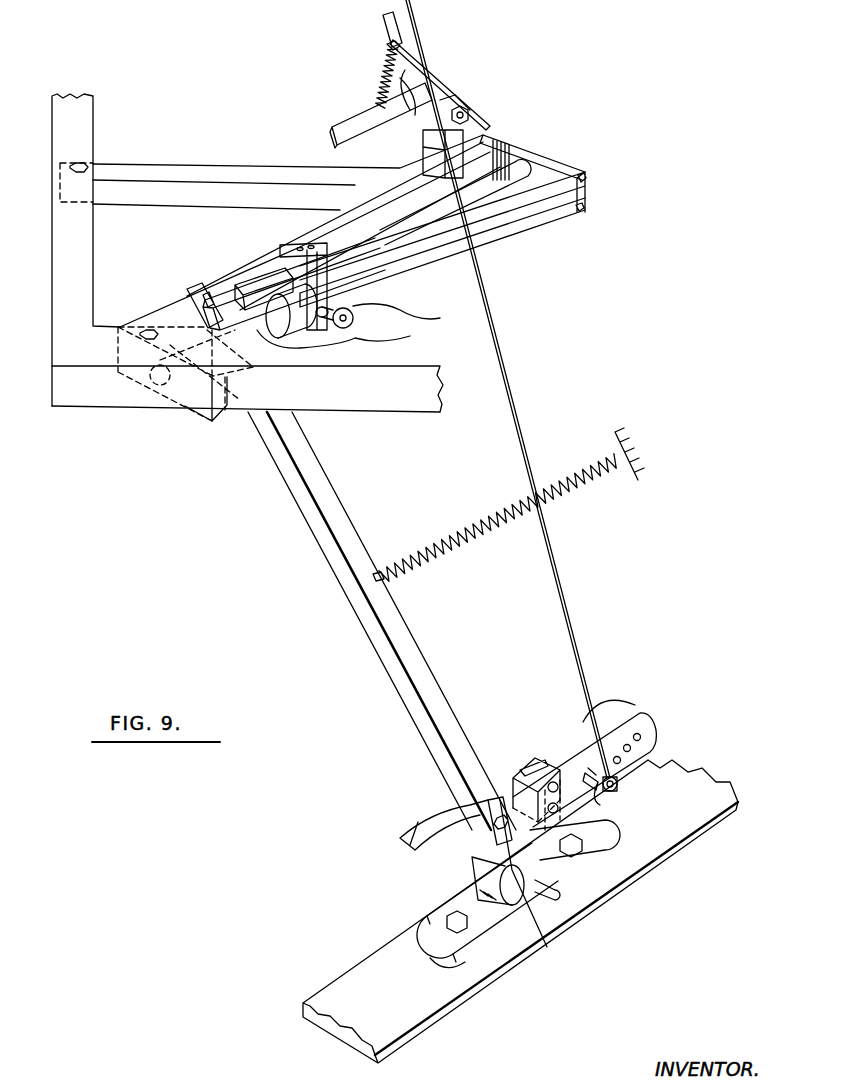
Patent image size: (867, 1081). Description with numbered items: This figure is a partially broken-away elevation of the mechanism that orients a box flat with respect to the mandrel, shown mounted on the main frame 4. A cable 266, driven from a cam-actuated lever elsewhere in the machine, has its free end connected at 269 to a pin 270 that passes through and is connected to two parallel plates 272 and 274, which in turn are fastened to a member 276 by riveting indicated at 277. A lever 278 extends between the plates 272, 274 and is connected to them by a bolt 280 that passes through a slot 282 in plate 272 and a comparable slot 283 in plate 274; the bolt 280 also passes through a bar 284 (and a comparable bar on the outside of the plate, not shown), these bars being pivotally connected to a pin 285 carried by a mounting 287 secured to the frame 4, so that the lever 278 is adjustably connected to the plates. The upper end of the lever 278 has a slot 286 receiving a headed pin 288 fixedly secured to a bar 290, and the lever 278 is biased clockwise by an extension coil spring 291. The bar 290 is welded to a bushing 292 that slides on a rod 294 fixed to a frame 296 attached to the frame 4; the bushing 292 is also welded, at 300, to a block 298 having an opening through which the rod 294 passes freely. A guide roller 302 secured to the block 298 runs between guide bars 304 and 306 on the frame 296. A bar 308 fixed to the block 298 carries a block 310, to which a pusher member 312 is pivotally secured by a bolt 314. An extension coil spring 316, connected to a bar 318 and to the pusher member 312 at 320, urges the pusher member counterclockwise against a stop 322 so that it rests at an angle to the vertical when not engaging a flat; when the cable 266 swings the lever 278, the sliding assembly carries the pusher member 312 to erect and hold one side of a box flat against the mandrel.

The frame 4 is at (78, 395).
The cable 266 is at (578, 650).
The connection of cable free end 269 is at (618, 785).
The pin 270 is at (590, 790).
The plate 272 is at (645, 725).
The plate 274 is at (612, 710).
The member 276 is at (543, 755).
The riveting 277 is at (555, 780).
The lever 278 is at (455, 730).
The bolt 280 is at (472, 860).
The slot 282 is at (455, 835).
The slot 283 is at (410, 833).
The bar 284 is at (545, 940).
The pin 285 is at (606, 852).
The slot 286 is at (203, 292).
The mounting 287 is at (450, 893).
The headed pin 288 is at (234, 266).
The bar 290 is at (268, 280).
The extension coil spring 291 is at (440, 540).
The bushing 292 is at (340, 326).
The rod 294 is at (515, 185).
The frame 296 is at (553, 160).
The block 298 is at (322, 258).
The welding 300 is at (395, 304).
The guide roller 302 is at (410, 336).
The guide bar 304 is at (576, 181).
The guide bar 306 is at (538, 232).
The bar 308 is at (363, 206).
The block 310 is at (486, 142).
The pusher member 312 is at (457, 95).
The bolt 314 is at (466, 114).
The extension coil spring 316 is at (385, 80).
The bar 318 is at (350, 125).
The spring connection on pusher member 320 is at (393, 42).
The stop 322 is at (412, 78).